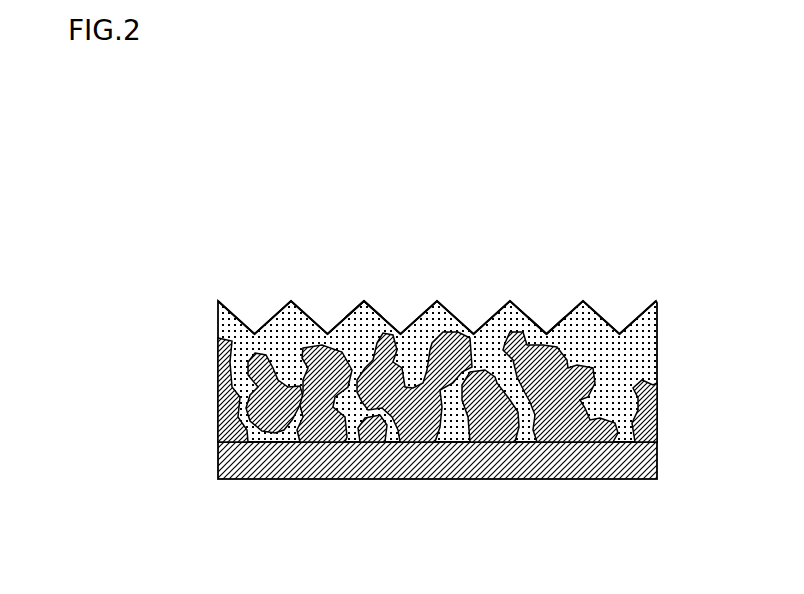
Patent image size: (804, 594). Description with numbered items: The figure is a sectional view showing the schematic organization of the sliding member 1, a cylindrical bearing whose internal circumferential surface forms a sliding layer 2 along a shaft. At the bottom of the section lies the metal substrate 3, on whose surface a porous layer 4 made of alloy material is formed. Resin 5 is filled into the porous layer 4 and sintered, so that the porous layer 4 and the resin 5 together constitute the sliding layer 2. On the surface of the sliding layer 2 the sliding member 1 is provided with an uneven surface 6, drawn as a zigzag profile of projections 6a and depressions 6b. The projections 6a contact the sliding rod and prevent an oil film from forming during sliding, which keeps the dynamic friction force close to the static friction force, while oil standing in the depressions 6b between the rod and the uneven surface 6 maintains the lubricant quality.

The sliding member 1 is at (269, 283).
The sliding layer 2 is at (670, 303).
The metal substrate 3 is at (225, 458).
The porous layer 4 is at (225, 410).
The resin 5 is at (225, 327).
The uneven surface 6 is at (470, 312).
The projections 6a is at (363, 300).
The depressions 6b is at (540, 320).